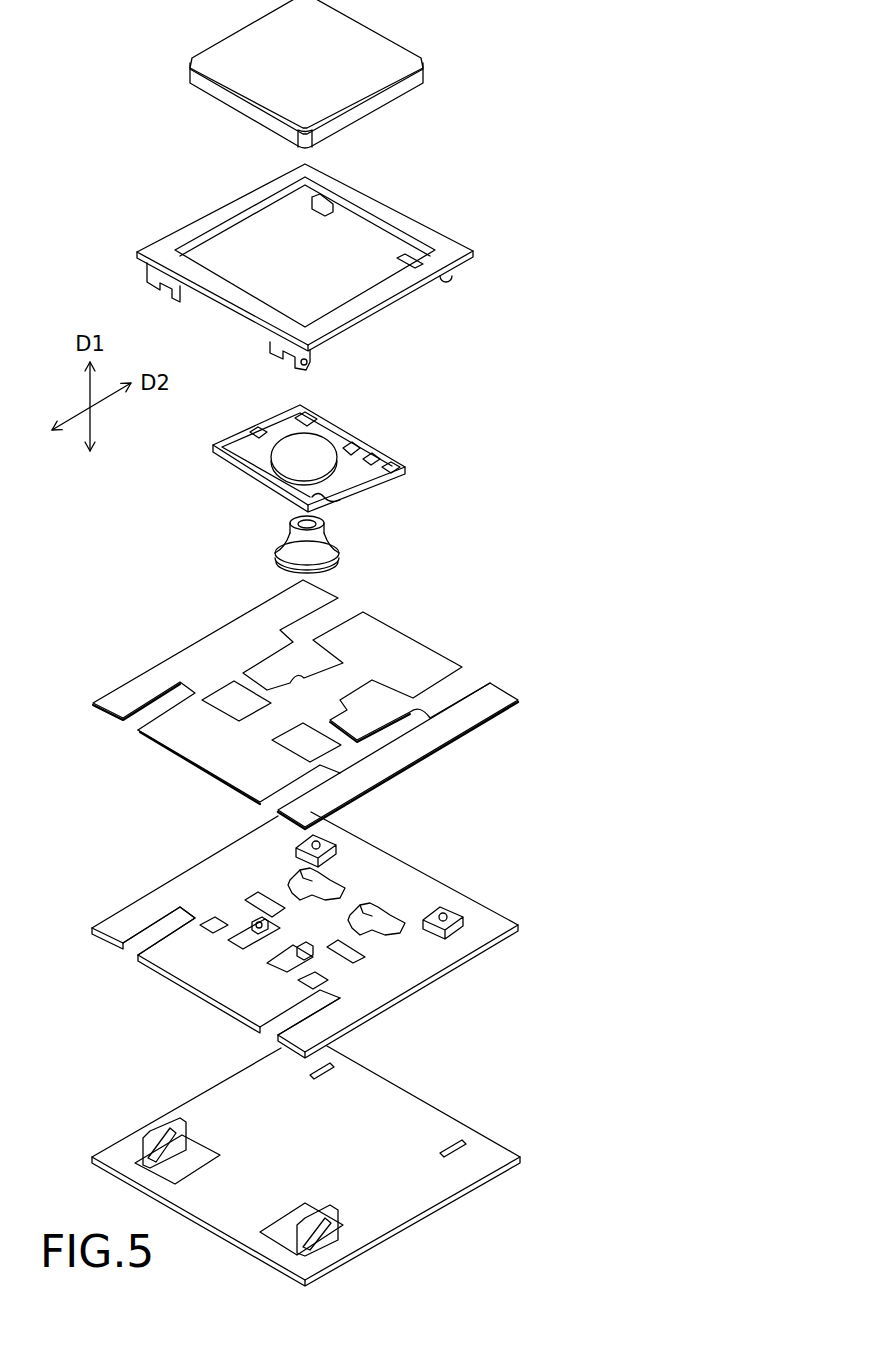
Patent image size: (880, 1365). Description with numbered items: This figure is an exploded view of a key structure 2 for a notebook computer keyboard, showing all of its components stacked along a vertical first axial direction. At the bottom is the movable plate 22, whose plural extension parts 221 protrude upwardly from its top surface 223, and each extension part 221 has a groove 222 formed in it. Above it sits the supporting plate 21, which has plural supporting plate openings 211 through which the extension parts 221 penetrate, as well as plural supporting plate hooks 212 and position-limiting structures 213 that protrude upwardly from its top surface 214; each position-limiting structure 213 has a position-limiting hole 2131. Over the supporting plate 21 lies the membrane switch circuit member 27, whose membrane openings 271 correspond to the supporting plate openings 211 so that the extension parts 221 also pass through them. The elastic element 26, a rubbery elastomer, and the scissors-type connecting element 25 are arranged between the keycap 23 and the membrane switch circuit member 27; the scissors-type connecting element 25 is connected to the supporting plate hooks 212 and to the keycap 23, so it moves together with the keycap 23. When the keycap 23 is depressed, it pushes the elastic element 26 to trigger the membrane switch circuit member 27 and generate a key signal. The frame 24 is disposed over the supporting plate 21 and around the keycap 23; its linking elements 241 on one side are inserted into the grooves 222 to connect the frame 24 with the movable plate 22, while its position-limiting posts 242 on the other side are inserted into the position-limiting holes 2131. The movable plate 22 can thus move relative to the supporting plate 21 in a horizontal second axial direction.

The key structure 2 is at (112, 60).
The keycap 23 is at (352, 47).
The frame 24 is at (316, 290).
The linking element 241 is at (315, 355).
The position-limiting post 242 is at (455, 278).
The scissors-type connecting element 25 is at (268, 470).
The elastic element 26 is at (322, 547).
The membrane switch circuit member 27 is at (312, 704).
The membrane opening 271 is at (463, 690).
The supporting plate 21 is at (305, 929).
The supporting plate opening 211 is at (133, 948).
The supporting plate hook 212 is at (315, 952).
The position-limiting structure 213 is at (413, 869).
The position-limiting hole 2131 is at (438, 910).
The top surface 214 is at (440, 955).
The movable plate 22 is at (300, 1173).
The extension part 221 is at (229, 1201).
The groove 222 is at (313, 1237).
The top surface 223 is at (415, 1198).